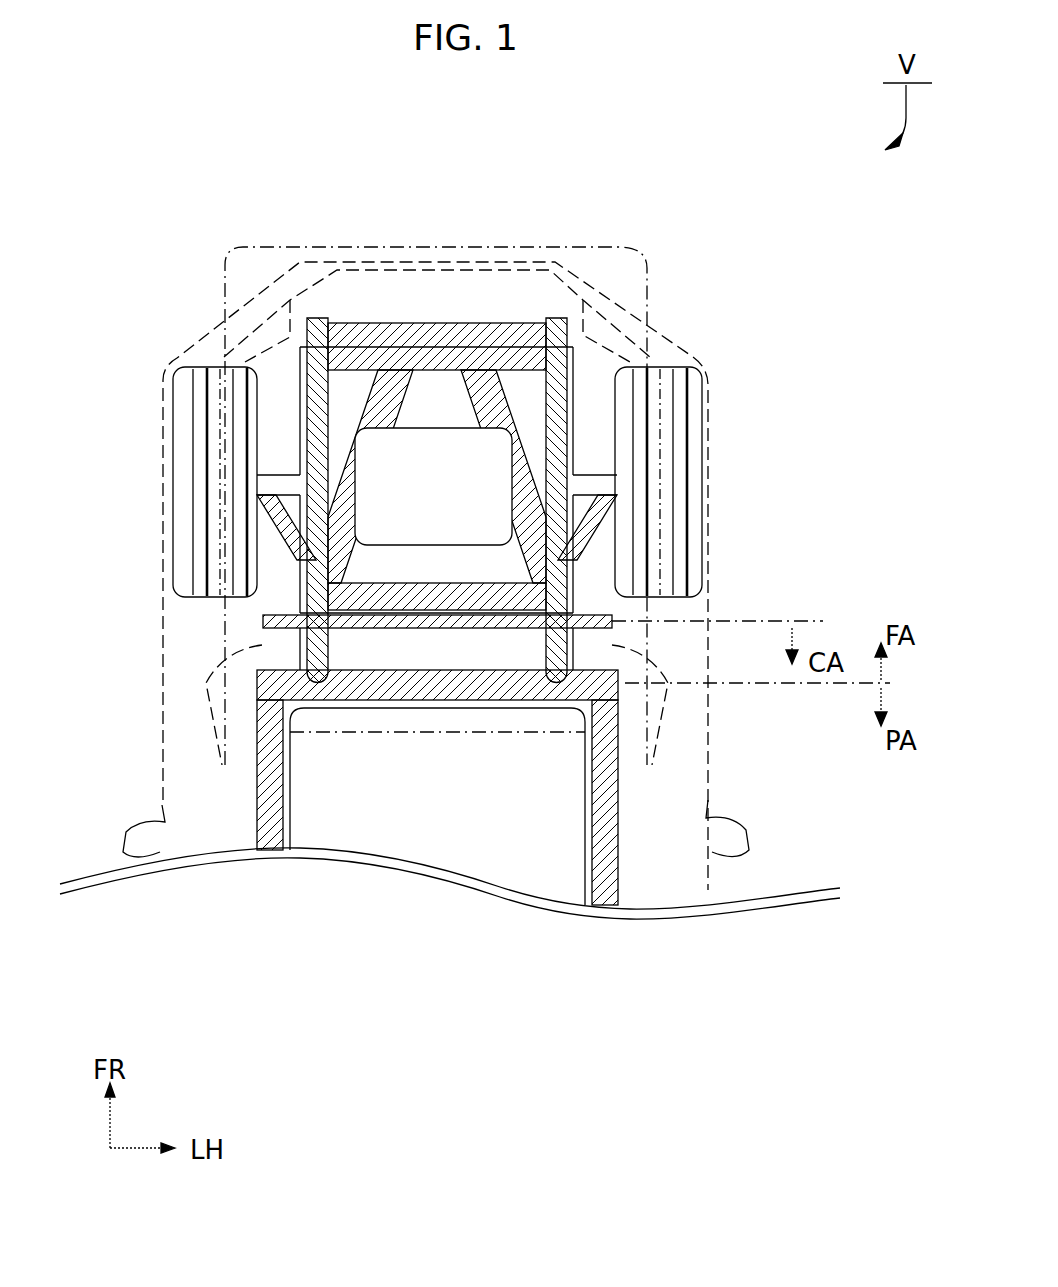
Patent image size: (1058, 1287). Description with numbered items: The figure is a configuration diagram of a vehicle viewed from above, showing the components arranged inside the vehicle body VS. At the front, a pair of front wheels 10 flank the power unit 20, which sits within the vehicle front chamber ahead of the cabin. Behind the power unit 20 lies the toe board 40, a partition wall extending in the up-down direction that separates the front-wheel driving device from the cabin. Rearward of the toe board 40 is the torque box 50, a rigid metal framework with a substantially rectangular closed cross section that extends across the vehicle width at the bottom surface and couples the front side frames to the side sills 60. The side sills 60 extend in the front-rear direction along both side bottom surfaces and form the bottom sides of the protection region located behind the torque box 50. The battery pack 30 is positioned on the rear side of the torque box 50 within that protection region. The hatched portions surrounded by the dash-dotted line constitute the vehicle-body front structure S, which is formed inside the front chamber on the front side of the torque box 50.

The front wheels 10 is at (193, 437).
The power unit 20 is at (392, 526).
The battery pack 30 is at (361, 770).
The toe board 40 is at (268, 630).
The torque box 50 is at (393, 688).
The side sills 60 is at (273, 817).
The vehicle-body front structure S is at (608, 236).
The vehicle body VS is at (172, 348).